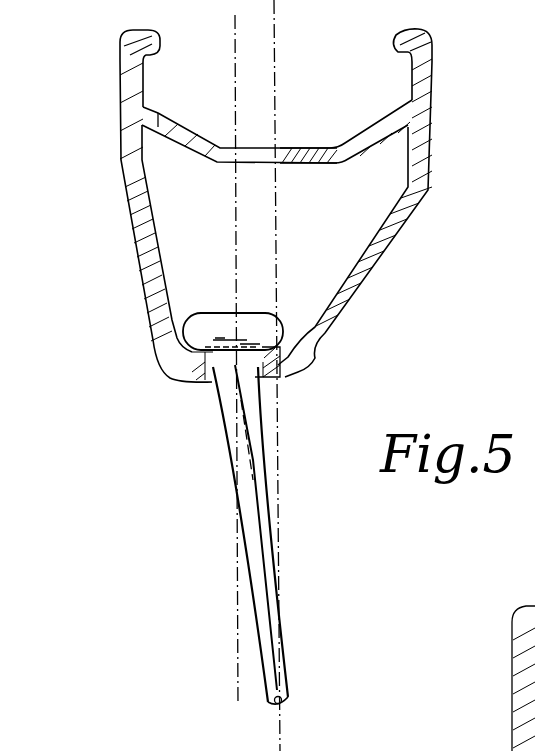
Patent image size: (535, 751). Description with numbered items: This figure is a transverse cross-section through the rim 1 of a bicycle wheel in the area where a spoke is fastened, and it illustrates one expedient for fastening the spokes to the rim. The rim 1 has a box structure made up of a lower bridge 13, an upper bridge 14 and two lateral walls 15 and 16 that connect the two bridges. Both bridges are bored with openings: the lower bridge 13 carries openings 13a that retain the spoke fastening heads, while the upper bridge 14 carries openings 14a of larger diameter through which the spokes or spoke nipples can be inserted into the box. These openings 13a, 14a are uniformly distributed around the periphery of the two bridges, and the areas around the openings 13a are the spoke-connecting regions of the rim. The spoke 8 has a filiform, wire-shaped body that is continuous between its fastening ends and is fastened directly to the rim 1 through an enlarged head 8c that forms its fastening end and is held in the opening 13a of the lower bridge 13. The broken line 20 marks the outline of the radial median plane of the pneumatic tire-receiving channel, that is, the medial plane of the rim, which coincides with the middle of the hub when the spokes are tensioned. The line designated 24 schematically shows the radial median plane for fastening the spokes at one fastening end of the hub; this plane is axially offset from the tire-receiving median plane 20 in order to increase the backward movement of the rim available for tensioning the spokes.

The rim 1 is at (284, 246).
The spoke 8 is at (204, 508).
The enlarged head 8c is at (213, 365).
The lower bridge 13 is at (284, 402).
The openings 13a is at (277, 387).
The upper bridge 14 is at (277, 113).
The openings 14a is at (287, 150).
The lateral wall 15 is at (132, 200).
The lateral wall 16 is at (403, 222).
The broken line 20 is at (291, 64).
The radial median plane for fastening the spokes 24 is at (233, 88).